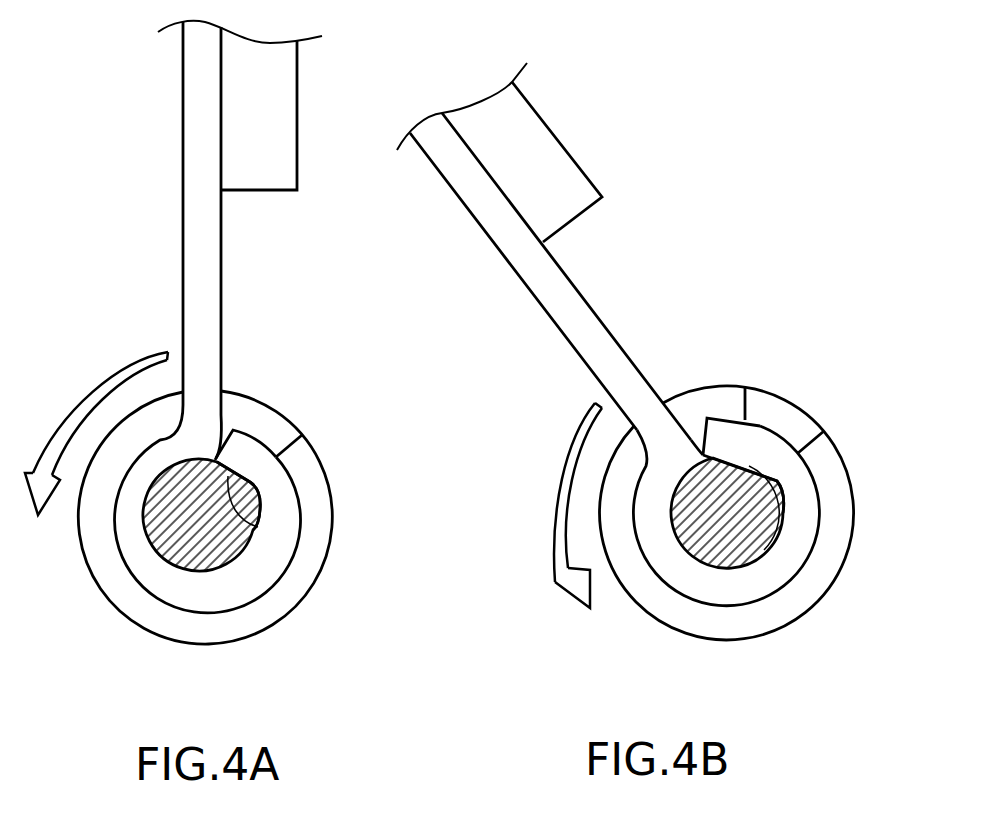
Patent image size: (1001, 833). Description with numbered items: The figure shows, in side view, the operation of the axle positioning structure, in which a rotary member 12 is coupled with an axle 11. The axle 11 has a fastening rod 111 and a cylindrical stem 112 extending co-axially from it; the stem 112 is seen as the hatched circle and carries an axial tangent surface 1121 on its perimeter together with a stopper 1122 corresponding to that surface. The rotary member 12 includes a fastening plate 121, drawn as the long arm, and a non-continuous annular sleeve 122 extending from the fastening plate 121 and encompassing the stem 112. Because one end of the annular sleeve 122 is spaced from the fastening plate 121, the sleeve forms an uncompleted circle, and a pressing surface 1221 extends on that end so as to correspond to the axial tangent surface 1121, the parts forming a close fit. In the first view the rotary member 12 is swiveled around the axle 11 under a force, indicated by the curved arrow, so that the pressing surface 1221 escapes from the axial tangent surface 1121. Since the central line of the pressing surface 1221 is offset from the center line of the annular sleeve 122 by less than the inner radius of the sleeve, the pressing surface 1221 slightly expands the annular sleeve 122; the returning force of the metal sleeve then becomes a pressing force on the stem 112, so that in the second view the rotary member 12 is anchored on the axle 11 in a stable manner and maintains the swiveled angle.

In FIG. 4A, the axle 11 is at (103, 597).
In FIG. 4B, the axle 11 is at (638, 608).
In FIG. 4A, the fastening rod 111 is at (307, 479).
In FIG. 4B, the fastening rod 111 is at (807, 590).
In FIG. 4A, the stem 112 is at (213, 550).
In FIG. 4B, the stem 112 is at (725, 545).
In FIG. 4A, the axial tangent surface 1121 is at (242, 517).
In FIG. 4B, the axial tangent surface 1121 is at (758, 468).
In FIG. 4A, the stopper 1122 is at (272, 428).
In FIG. 4B, the stopper 1122 is at (782, 410).
In FIG. 4A, the rotary member 12 is at (230, 291).
In FIG. 4B, the rotary member 12 is at (606, 317).
In FIG. 4A, the fastening plate 121 is at (202, 113).
In FIG. 4B, the fastening plate 121 is at (483, 207).
In FIG. 4A, the annular sleeve 122 is at (183, 583).
In FIG. 4B, the annular sleeve 122 is at (697, 580).
In FIG. 4A, the pressing surface 1221 is at (232, 462).
In FIG. 4B, the pressing surface 1221 is at (723, 450).